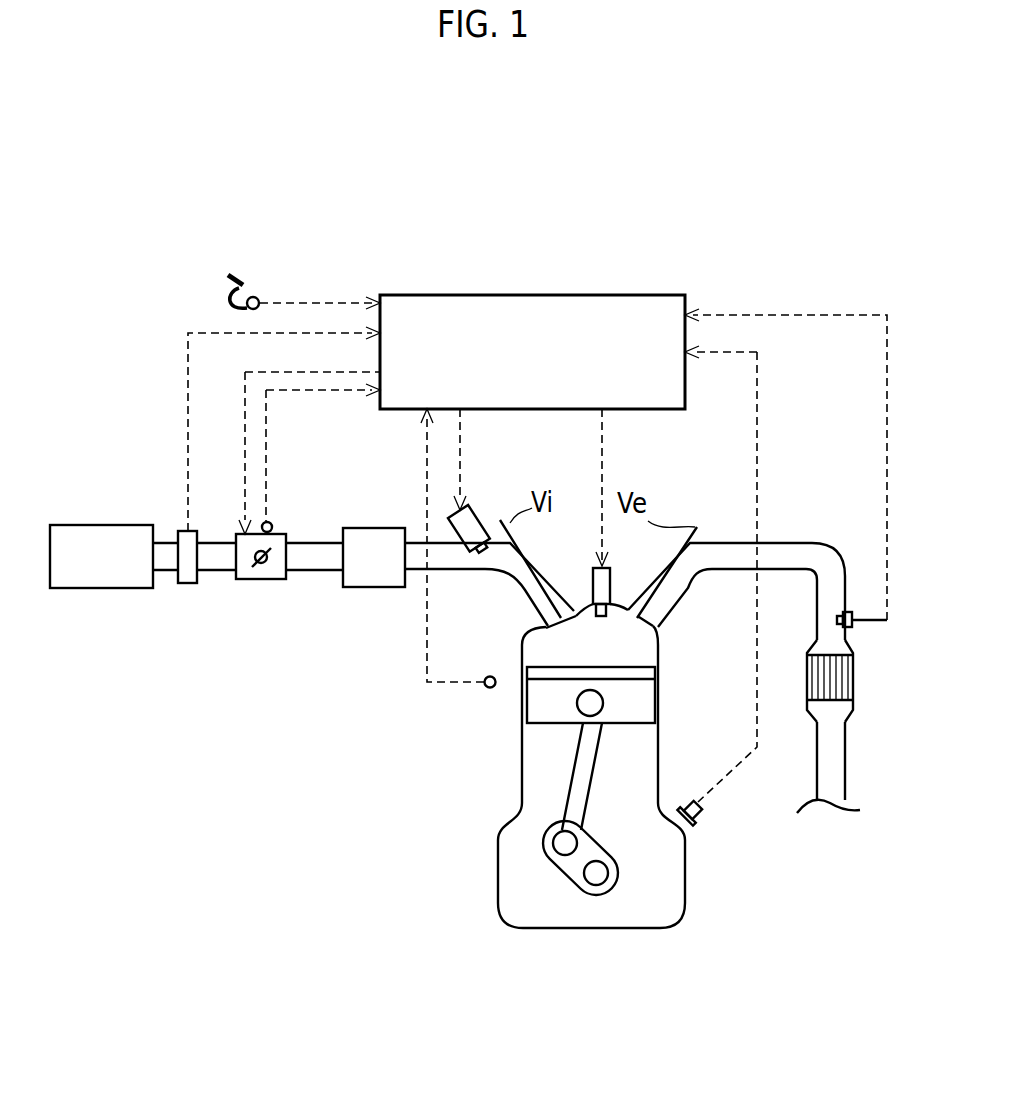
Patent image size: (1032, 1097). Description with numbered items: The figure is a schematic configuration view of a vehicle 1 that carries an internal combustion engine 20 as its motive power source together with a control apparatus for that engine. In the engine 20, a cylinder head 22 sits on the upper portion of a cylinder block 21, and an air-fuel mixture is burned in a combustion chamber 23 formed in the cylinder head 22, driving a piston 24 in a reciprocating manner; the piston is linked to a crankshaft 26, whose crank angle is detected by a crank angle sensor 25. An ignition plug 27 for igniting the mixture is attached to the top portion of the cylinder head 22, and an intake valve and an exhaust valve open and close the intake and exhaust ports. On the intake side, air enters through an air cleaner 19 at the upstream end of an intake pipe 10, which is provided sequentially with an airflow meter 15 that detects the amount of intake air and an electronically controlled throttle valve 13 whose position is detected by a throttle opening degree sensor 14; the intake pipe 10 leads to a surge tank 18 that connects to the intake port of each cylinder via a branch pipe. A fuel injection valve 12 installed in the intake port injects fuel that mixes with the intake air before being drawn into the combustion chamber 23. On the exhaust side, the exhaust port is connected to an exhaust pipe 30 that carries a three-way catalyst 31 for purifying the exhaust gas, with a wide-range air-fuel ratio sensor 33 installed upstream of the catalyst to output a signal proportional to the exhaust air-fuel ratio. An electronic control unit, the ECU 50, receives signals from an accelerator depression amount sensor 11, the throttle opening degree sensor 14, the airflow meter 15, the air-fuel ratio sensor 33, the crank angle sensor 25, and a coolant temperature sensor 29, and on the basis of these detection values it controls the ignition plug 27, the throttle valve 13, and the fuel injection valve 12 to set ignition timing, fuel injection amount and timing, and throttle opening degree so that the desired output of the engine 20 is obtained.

The vehicle 1 is at (896, 298).
The intake pipe 10 is at (330, 543).
The accelerator depression amount sensor 11 is at (256, 296).
The fuel injection valve 12 is at (482, 515).
The throttle valve 13 is at (270, 579).
The throttle opening degree sensor 14 is at (270, 521).
The airflow meter 15 is at (188, 583).
The surge tank 18 is at (365, 528).
The air cleaner 19 is at (100, 525).
The internal combustion engine 20 is at (603, 669).
The cylinder block 21 is at (517, 862).
The cylinder head 22 is at (660, 632).
The combustion chamber 23 is at (642, 658).
The piston 24 is at (655, 712).
The crank angle sensor 25 is at (697, 826).
The crankshaft 26 is at (596, 880).
The ignition plug 27 is at (611, 580).
The coolant temperature sensor 29 is at (490, 688).
The exhaust pipe 30 is at (783, 541).
The three-way catalyst 31 is at (850, 677).
The air-fuel ratio sensor 33 is at (848, 608).
The ECU 50 is at (688, 295).